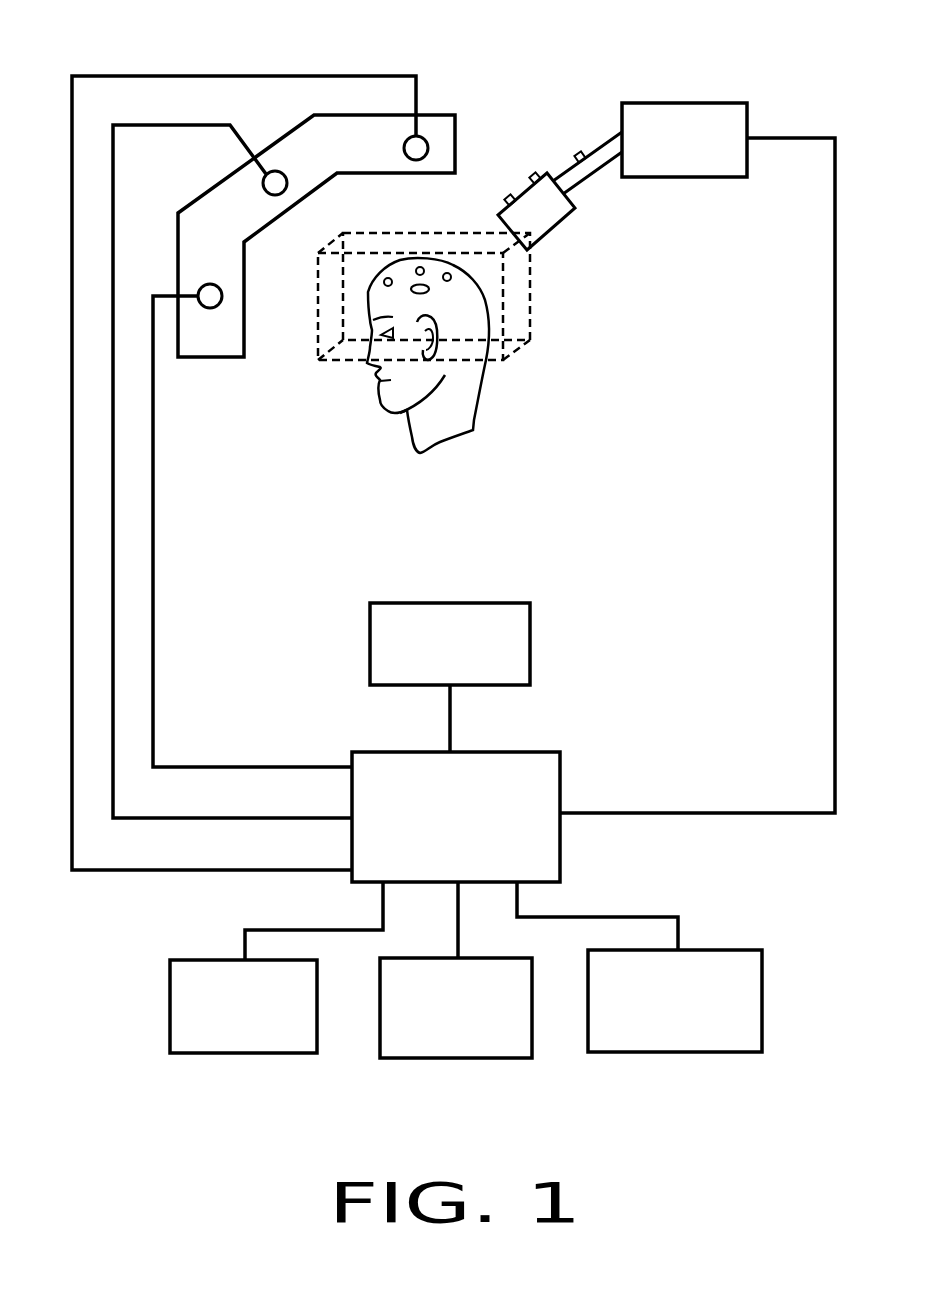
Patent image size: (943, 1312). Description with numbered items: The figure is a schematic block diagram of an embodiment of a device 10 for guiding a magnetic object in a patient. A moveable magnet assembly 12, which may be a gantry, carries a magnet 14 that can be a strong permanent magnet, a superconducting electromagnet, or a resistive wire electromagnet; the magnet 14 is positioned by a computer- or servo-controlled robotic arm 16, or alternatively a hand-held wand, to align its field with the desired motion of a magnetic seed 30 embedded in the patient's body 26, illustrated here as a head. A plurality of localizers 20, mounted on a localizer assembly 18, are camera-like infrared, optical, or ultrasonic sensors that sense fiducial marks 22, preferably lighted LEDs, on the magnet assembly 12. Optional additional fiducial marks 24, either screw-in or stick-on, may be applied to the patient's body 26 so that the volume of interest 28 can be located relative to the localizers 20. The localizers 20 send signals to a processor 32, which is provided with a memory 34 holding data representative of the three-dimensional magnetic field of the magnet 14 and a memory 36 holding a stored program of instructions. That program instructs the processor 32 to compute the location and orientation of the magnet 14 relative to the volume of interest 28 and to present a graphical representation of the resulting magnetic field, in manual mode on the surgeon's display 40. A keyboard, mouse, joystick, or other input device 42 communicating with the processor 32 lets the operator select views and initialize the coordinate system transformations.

The device 10 is at (428, 38).
The moveable magnet assembly 12 is at (588, 104).
The magnet 14 is at (556, 228).
The robotic arm 16 is at (607, 163).
The localizer assembly 18 is at (227, 200).
The localizers 20 is at (421, 137).
The fiducial marks 22 is at (510, 195).
The fiducial marks 24 is at (394, 308).
The patient's body 26 is at (462, 393).
The volume of interest 28 is at (317, 332).
The magnetic seed 30 is at (428, 291).
The processor 32 is at (560, 770).
The memory 34 is at (213, 958).
The memory 36 is at (533, 988).
The display 40 is at (483, 603).
The input device 42 is at (730, 950).